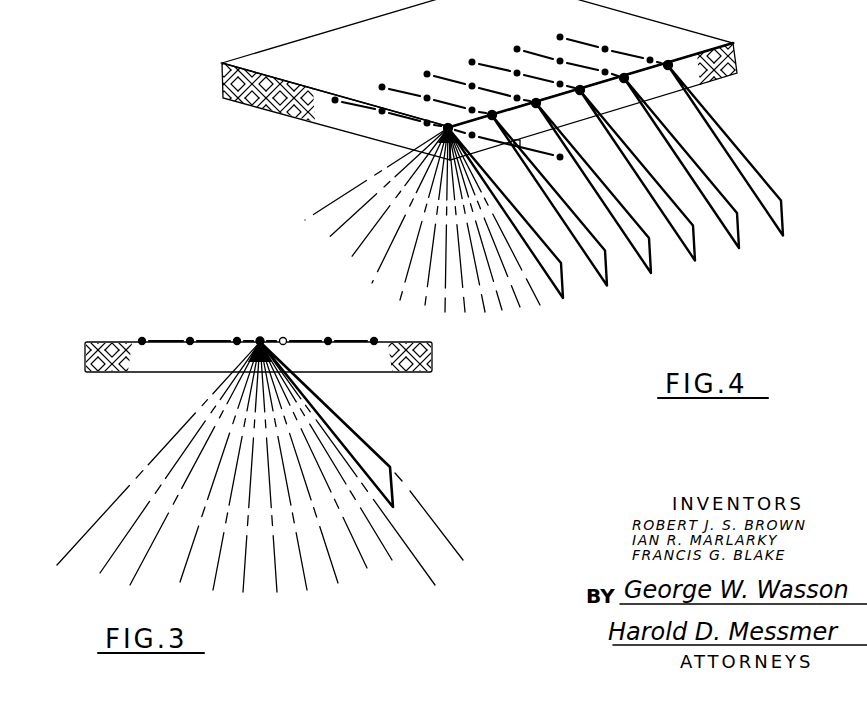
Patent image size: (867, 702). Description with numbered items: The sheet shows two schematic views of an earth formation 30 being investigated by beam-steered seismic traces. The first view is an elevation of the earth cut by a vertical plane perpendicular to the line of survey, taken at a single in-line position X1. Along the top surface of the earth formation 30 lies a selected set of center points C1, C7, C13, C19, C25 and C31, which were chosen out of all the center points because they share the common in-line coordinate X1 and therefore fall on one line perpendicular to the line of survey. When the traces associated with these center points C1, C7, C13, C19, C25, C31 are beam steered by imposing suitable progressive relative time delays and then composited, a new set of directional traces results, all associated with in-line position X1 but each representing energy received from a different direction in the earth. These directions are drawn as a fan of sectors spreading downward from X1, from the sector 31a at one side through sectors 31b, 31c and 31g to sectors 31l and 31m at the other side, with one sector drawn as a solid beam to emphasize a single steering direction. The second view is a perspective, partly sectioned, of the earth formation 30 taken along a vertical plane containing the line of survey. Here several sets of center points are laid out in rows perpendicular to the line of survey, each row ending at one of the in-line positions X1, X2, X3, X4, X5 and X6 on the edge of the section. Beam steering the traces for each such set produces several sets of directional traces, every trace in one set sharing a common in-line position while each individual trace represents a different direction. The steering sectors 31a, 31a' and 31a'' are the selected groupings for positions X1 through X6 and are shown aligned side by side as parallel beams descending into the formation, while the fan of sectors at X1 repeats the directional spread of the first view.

In FIG. 3, the earth formation 30 is at (115, 372).
In FIG. 4, the earth formation 30 is at (262, 109).
In FIG. 3, the steering sector 31a is at (369, 464).
In FIG. 4, the steering sector 31a is at (536, 242).
In FIG. 4, the steering sector 31a' is at (584, 229).
In FIG. 4, the steering sector 31a'' is at (630, 214).
In FIG. 3, the sector 31b is at (358, 474).
In FIG. 3, the sector 31c is at (373, 552).
In FIG. 3, the sector 31g is at (260, 578).
In FIG. 3, the sector 31l is at (165, 474).
In FIG. 3, the sector 31m is at (146, 464).
In FIG. 3, the in-line position X1 is at (260, 337).
In FIG. 4, the in-line position X1 is at (448, 124).
In FIG. 4, the in-line position X2 is at (492, 112).
In FIG. 4, the in-line position X3 is at (536, 100).
In FIG. 4, the in-line position X4 is at (580, 87).
In FIG. 4, the in-line position X5 is at (624, 75).
In FIG. 4, the in-line position X6 is at (668, 62).
In FIG. 3, the center point C1 is at (142, 337).
In FIG. 3, the center point C7 is at (190, 337).
In FIG. 3, the center point C13 is at (237, 337).
In FIG. 3, the center point C19 is at (283, 337).
In FIG. 3, the center point C25 is at (328, 337).
In FIG. 3, the center point C31 is at (374, 337).